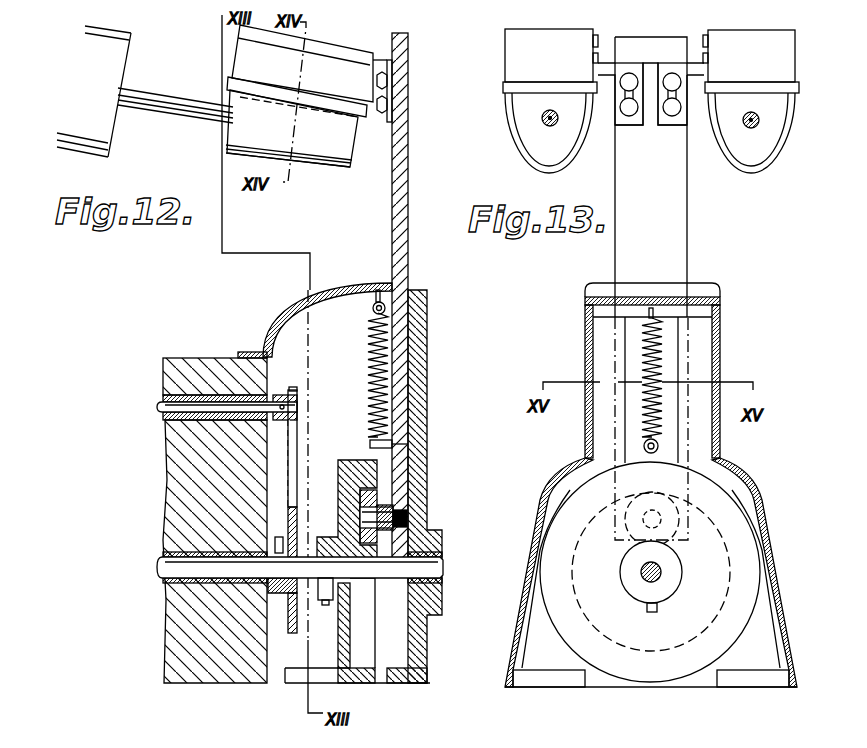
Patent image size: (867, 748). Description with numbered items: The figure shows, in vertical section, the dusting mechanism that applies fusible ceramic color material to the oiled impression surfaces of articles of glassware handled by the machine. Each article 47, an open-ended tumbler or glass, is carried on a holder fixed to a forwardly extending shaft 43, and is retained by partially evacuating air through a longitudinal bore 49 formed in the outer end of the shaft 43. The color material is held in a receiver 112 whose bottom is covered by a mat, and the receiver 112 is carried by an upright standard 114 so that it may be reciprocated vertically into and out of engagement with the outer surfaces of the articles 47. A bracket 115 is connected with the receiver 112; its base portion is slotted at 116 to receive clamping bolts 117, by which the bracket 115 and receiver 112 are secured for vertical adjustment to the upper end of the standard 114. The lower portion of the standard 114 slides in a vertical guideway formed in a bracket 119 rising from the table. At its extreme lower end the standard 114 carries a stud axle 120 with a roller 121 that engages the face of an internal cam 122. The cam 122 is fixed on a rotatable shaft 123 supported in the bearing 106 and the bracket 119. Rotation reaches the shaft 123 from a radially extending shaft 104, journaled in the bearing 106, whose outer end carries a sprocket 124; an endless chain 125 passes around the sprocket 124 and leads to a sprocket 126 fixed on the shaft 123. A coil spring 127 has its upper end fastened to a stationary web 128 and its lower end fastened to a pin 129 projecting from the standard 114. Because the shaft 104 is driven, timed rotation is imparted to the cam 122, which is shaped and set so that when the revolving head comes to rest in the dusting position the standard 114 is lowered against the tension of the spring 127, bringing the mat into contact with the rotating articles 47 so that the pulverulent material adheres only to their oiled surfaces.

In FIG. 12, the shaft 43 is at (190, 100).
In FIG. 13, the shaft 43 is at (548, 120).
In FIG. 12, the article 47 is at (328, 160).
In FIG. 13, the article 47 is at (522, 156).
In FIG. 13, the longitudinal bore 49 is at (542, 118).
In FIG. 12, the radially extending shaft 104 is at (270, 394).
In FIG. 12, the bearing 106 is at (208, 344).
In FIG. 12, the receiver 112 is at (350, 58).
In FIG. 13, the receiver 112 is at (513, 45).
In FIG. 12, the upright standard 114 is at (408, 200).
In FIG. 13, the upright standard 114 is at (687, 230).
In FIG. 13, the bracket 115 is at (620, 66).
In FIG. 13, the slot 116 is at (665, 74).
In FIG. 13, the clamping bolt 117 is at (676, 82).
In FIG. 12, the bracket 119 is at (428, 370).
In FIG. 12, the stud axle 120 is at (406, 510).
In FIG. 12, the roller 121 is at (360, 497).
In FIG. 13, the roller 121 is at (672, 520).
In FIG. 12, the internal cam 122 is at (346, 462).
In FIG. 13, the internal cam 122 is at (722, 638).
In FIG. 12, the shaft 123 is at (446, 568).
In FIG. 13, the shaft 123 is at (662, 572).
In FIG. 12, the sprocket 124 is at (300, 400).
In FIG. 12, the endless chain 125 is at (298, 440).
In FIG. 12, the sprocket 126 is at (298, 530).
In FIG. 12, the coil spring 127 is at (368, 338).
In FIG. 13, the coil spring 127 is at (660, 360).
In FIG. 12, the stationary web 128 is at (372, 304).
In FIG. 12, the pin 129 is at (396, 445).